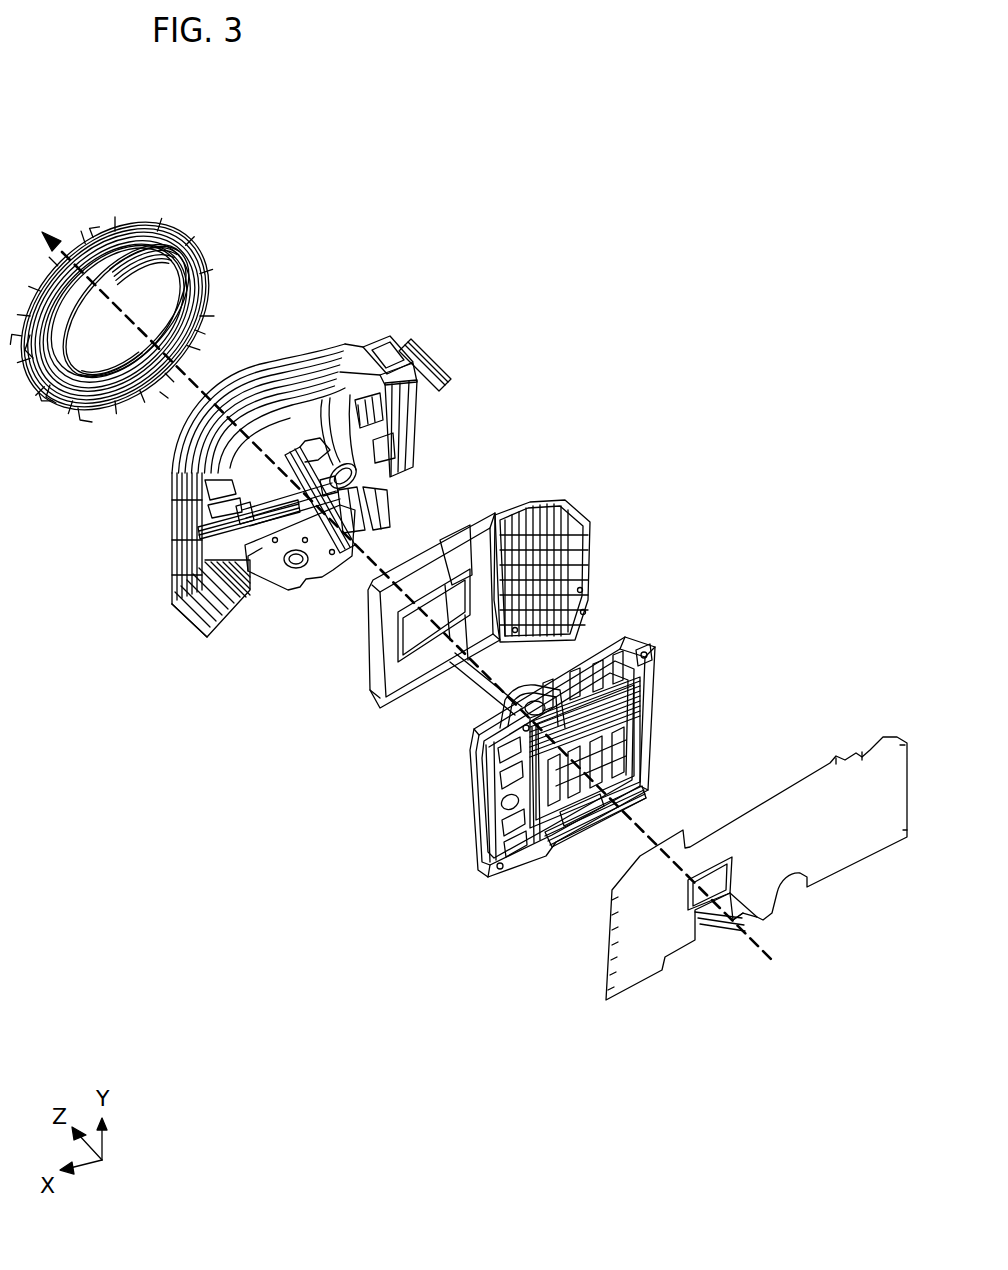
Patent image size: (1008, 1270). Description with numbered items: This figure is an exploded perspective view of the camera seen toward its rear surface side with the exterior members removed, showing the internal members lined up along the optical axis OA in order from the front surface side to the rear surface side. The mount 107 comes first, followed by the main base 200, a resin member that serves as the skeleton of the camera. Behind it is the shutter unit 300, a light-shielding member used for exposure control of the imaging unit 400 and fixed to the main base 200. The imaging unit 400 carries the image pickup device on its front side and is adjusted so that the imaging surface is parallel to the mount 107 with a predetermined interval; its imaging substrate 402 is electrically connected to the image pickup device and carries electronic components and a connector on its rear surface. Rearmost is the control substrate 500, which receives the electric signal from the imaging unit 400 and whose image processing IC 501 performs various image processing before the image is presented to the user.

The optical axis OA is at (397, 583).
The mount 107 is at (147, 222).
The main base 200 is at (397, 327).
The shutter unit 300 is at (555, 505).
The imaging unit 400 is at (641, 638).
The imaging substrate 402 is at (583, 830).
The control substrate 500 is at (817, 787).
The image processing IC 501 is at (696, 910).